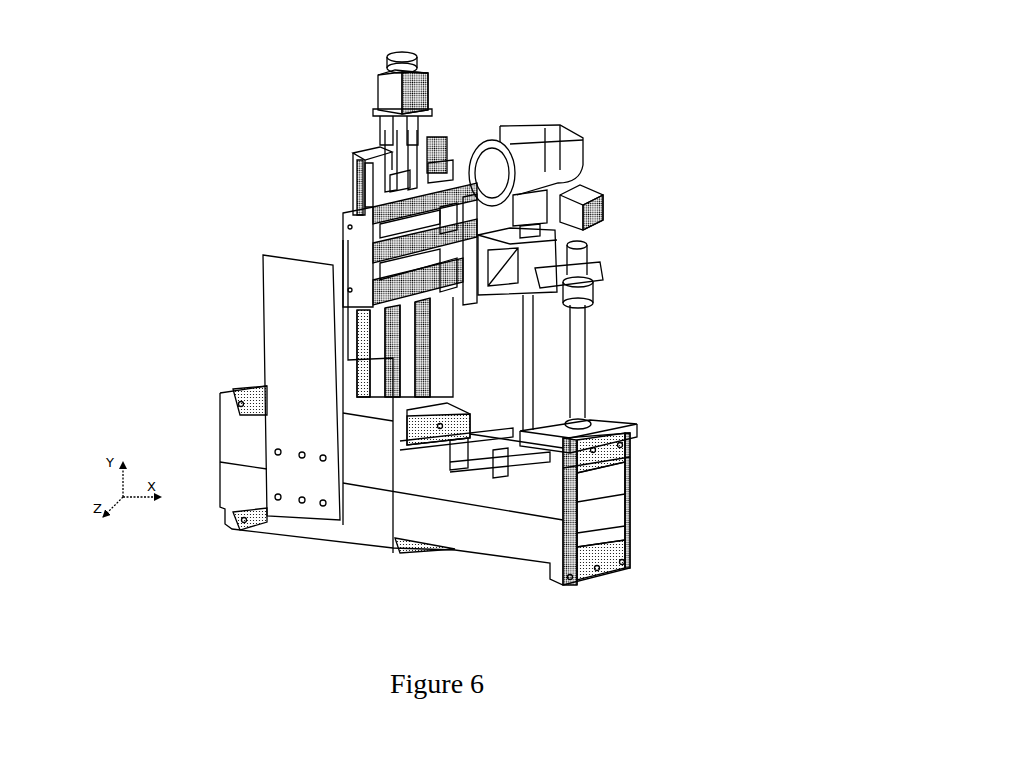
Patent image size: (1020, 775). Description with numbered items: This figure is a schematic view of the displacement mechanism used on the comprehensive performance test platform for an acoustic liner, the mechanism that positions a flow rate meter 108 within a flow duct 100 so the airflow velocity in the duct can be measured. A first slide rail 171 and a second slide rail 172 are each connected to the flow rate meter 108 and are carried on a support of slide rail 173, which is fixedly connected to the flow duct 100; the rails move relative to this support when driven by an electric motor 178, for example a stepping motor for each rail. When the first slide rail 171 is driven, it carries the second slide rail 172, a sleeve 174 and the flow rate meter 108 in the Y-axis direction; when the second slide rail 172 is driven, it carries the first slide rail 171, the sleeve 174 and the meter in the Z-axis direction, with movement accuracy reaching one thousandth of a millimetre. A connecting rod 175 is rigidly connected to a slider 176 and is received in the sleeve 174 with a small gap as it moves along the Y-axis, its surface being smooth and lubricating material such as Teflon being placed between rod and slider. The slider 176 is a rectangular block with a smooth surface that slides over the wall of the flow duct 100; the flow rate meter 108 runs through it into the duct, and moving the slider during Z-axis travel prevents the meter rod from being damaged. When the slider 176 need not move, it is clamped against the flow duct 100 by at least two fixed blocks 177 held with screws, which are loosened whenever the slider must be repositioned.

The flow duct 100 is at (615, 525).
The flow rate meter 108 is at (547, 132).
The first slide rail 171 is at (357, 158).
The second slide rail 172 is at (373, 258).
The support of slide rail 173 is at (278, 368).
The sleeve 174 is at (598, 278).
The connecting rod 175 is at (582, 358).
The slider 176 is at (607, 421).
The fixed block 177 is at (500, 462).
The electric motor 178 is at (412, 95).